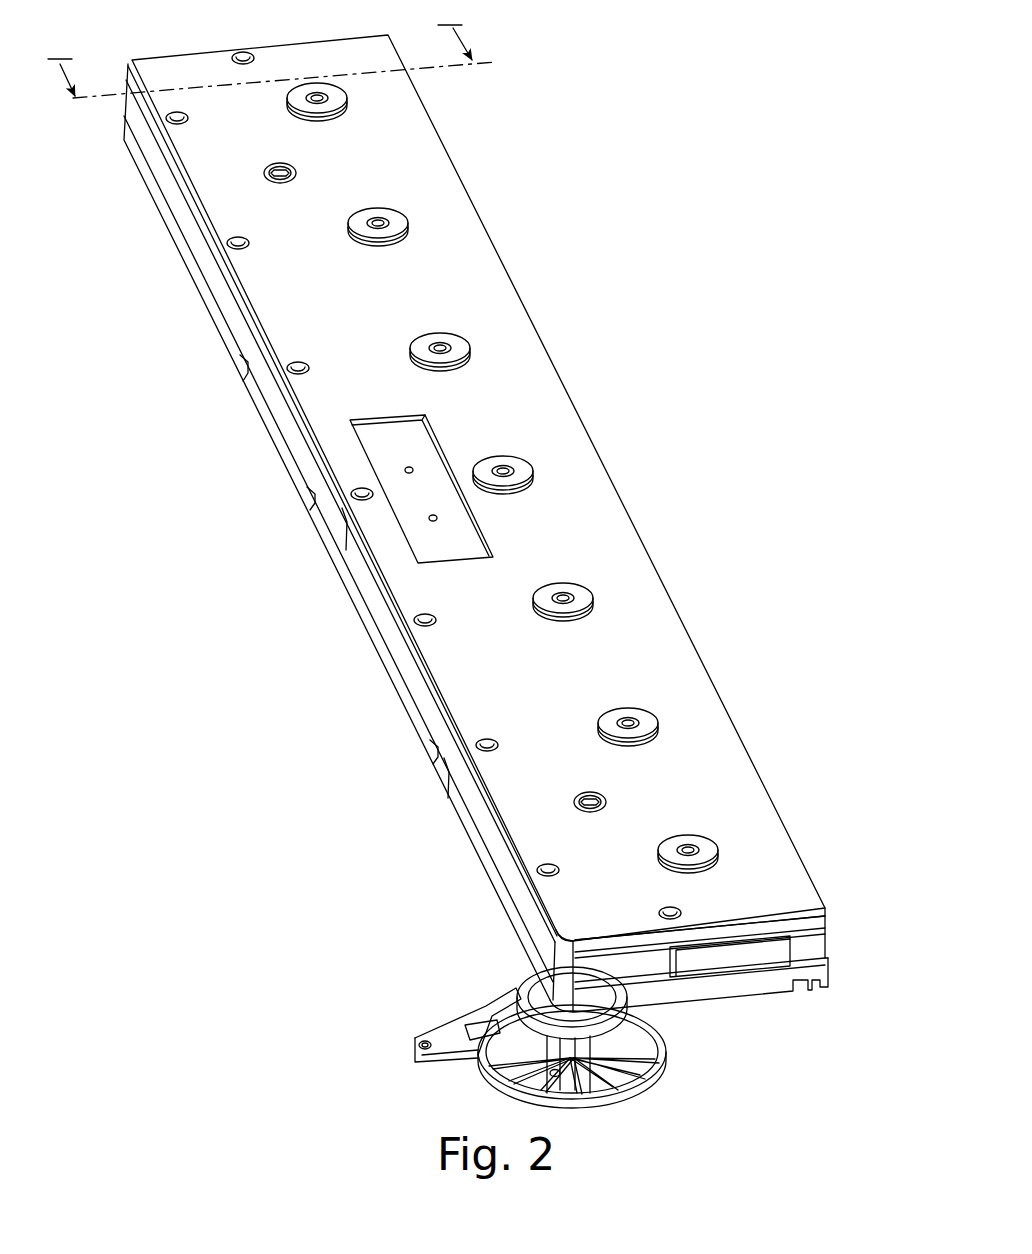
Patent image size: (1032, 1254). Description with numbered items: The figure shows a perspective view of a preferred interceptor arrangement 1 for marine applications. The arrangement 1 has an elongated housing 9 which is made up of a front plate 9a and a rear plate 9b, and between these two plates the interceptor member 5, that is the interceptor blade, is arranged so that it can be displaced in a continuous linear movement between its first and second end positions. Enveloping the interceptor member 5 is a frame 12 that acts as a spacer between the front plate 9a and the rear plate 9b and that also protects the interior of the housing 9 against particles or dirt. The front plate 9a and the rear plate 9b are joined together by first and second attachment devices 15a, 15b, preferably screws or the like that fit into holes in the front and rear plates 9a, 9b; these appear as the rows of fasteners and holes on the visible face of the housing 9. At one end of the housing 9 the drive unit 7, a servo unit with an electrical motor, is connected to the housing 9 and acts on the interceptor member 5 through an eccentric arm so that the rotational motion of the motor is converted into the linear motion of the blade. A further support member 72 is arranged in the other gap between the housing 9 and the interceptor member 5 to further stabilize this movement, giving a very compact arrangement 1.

The arrangement 1 is at (482, 554).
The housing 9 is at (512, 545).
The front plate 9a is at (755, 990).
The rear plate 9b is at (817, 920).
The interceptor member 5 is at (831, 929).
The drive unit 7 is at (668, 1082).
The frame 12 is at (528, 903).
The first attachment device 15a is at (473, 348).
The second attachment device 15b is at (283, 373).
The support member 72 is at (583, 795).